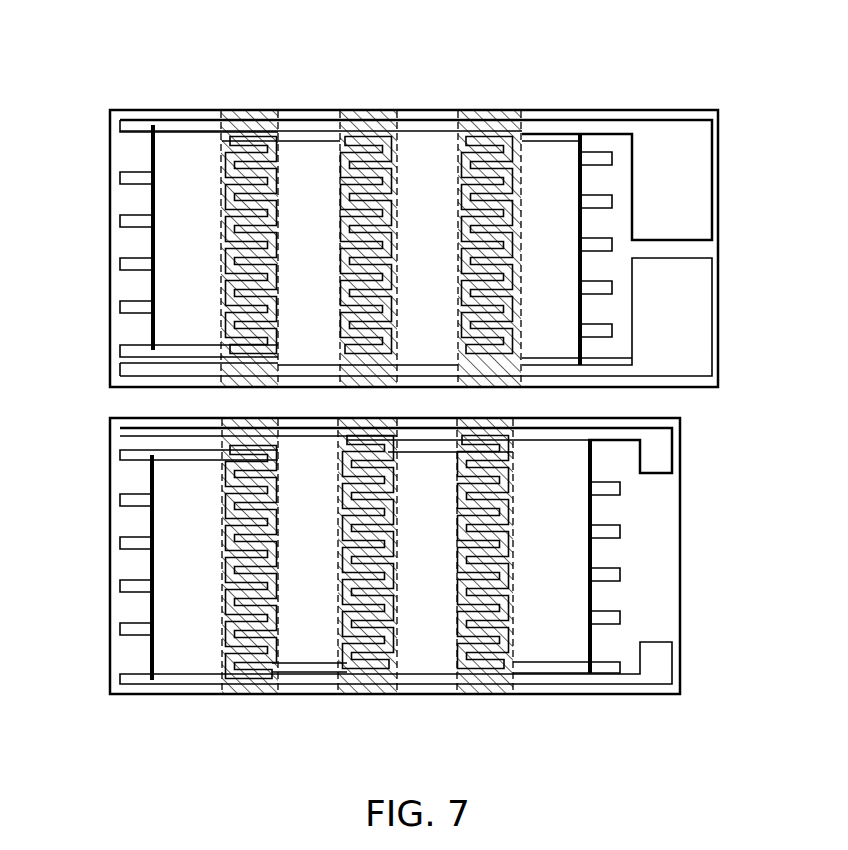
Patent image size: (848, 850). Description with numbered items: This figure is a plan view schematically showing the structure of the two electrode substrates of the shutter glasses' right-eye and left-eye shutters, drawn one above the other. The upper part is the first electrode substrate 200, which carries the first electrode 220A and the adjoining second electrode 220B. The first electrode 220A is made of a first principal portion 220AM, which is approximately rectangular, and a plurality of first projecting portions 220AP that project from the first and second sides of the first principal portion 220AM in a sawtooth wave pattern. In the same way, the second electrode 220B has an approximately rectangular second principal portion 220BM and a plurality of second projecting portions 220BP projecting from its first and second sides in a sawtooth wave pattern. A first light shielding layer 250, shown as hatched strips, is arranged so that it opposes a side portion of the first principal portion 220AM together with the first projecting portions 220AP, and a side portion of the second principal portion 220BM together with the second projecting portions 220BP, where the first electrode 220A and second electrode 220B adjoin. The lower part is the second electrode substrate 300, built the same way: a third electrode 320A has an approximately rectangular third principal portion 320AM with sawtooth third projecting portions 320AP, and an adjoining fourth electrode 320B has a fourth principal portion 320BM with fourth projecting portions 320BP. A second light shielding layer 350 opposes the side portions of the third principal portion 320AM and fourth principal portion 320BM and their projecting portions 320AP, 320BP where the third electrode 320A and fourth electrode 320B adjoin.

The first electrode substrate 200 is at (744, 242).
The first electrode 220A is at (181, 116).
The second electrode 220B is at (312, 147).
The first projecting portions 220AP is at (282, 117).
The second projecting portions 220BP is at (400, 158).
The first principal portion 220AM is at (168, 151).
The second principal portion 220BM is at (298, 204).
The first light shielding layer 250 is at (281, 160).
The second electrode substrate 300 is at (700, 573).
The third electrode 320A is at (176, 684).
The fourth electrode 320B is at (305, 656).
The third projecting portions 320AP is at (247, 665).
The fourth projecting portions 320BP is at (380, 670).
The third principal portion 320AM is at (168, 603).
The fourth principal portion 320BM is at (298, 534).
The second light shielding layer 350 is at (308, 658).